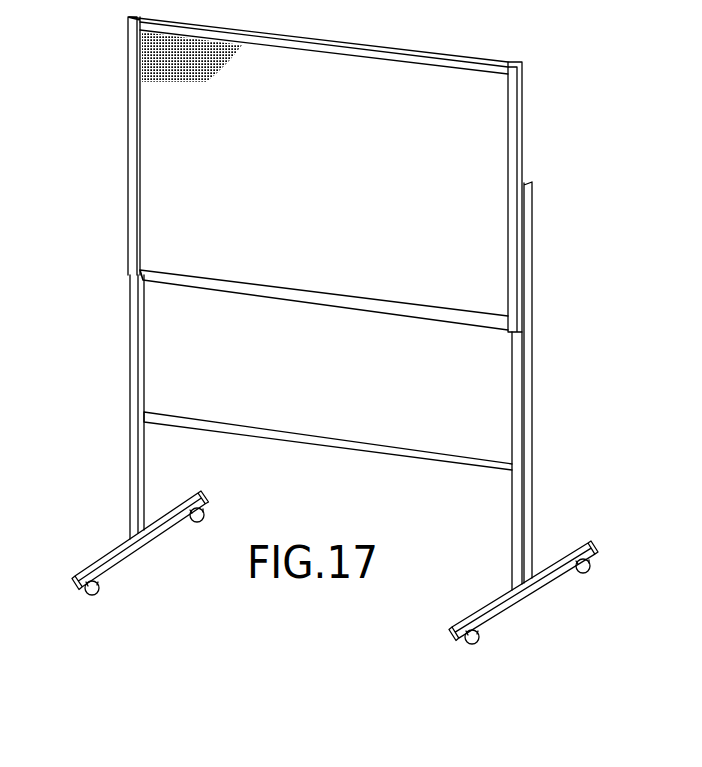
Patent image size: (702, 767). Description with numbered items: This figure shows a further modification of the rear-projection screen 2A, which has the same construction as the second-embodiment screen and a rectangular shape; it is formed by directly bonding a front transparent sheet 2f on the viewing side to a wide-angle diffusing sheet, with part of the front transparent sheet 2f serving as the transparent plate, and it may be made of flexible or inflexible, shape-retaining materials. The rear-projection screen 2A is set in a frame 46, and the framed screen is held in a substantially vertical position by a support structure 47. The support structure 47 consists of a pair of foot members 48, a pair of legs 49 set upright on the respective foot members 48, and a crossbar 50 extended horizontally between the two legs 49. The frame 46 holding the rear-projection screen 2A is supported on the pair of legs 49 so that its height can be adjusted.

The rear-projection screen 2A is at (485, 151).
The front transparent sheet 2f is at (168, 62).
The frame 46 is at (447, 62).
The support structure 47 is at (533, 377).
The foot members 48 is at (168, 525).
The legs 49 is at (143, 364).
The crossbar 50 is at (318, 436).